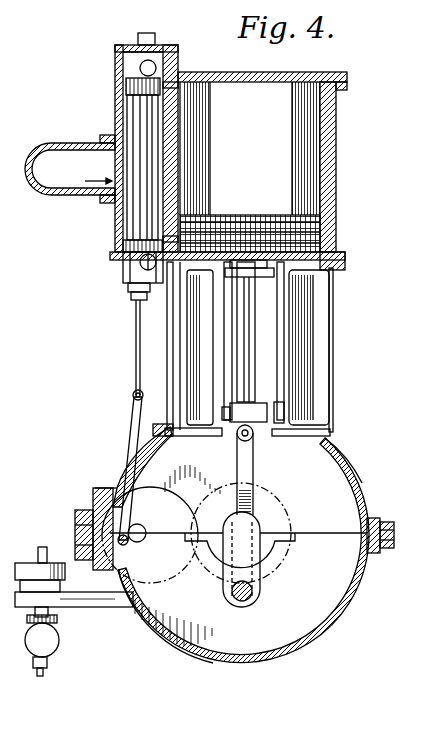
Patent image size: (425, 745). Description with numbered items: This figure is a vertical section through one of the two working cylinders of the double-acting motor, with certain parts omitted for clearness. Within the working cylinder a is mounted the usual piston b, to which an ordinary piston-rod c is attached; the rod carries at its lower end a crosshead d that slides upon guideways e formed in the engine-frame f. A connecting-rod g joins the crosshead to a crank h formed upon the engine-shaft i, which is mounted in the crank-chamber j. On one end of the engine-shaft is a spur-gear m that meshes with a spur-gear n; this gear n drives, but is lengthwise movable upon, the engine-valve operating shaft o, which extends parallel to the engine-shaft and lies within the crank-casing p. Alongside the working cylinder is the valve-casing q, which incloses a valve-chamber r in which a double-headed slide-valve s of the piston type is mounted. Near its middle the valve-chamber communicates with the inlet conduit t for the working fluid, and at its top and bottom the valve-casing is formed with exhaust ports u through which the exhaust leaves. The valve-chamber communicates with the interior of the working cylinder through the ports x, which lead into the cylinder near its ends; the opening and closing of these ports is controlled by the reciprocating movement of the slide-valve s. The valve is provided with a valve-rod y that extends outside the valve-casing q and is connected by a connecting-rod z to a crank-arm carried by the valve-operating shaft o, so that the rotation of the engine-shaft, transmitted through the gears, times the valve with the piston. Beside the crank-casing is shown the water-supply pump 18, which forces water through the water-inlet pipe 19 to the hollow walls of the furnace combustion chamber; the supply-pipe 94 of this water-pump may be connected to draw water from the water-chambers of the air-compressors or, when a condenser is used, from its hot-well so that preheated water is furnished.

The working cylinder a is at (340, 162).
The piston b is at (336, 232).
The piston-rod c is at (248, 305).
The crosshead d is at (250, 412).
The guideways e is at (282, 368).
The engine-frame f is at (327, 334).
The connecting-rod g is at (248, 453).
The crank h is at (143, 536).
The engine-shaft i is at (268, 527).
The crank-chamber j is at (240, 550).
The spur-gear m is at (190, 603).
The spur-gear n is at (157, 583).
The engine-valve operating shaft o is at (143, 528).
The crank-casing p is at (320, 637).
The valve-casing q is at (116, 92).
The valve-chamber r is at (137, 122).
The slide-valve s is at (148, 167).
The inlet conduit t is at (68, 182).
The exhaust ports u is at (132, 66).
The ports x is at (180, 82).
The valve-rod y is at (135, 350).
The connecting-rod z is at (128, 430).
The water-supply pump 18 is at (55, 617).
The water-inlet pipe 19 is at (40, 547).
The supply-pipe 94 is at (42, 663).